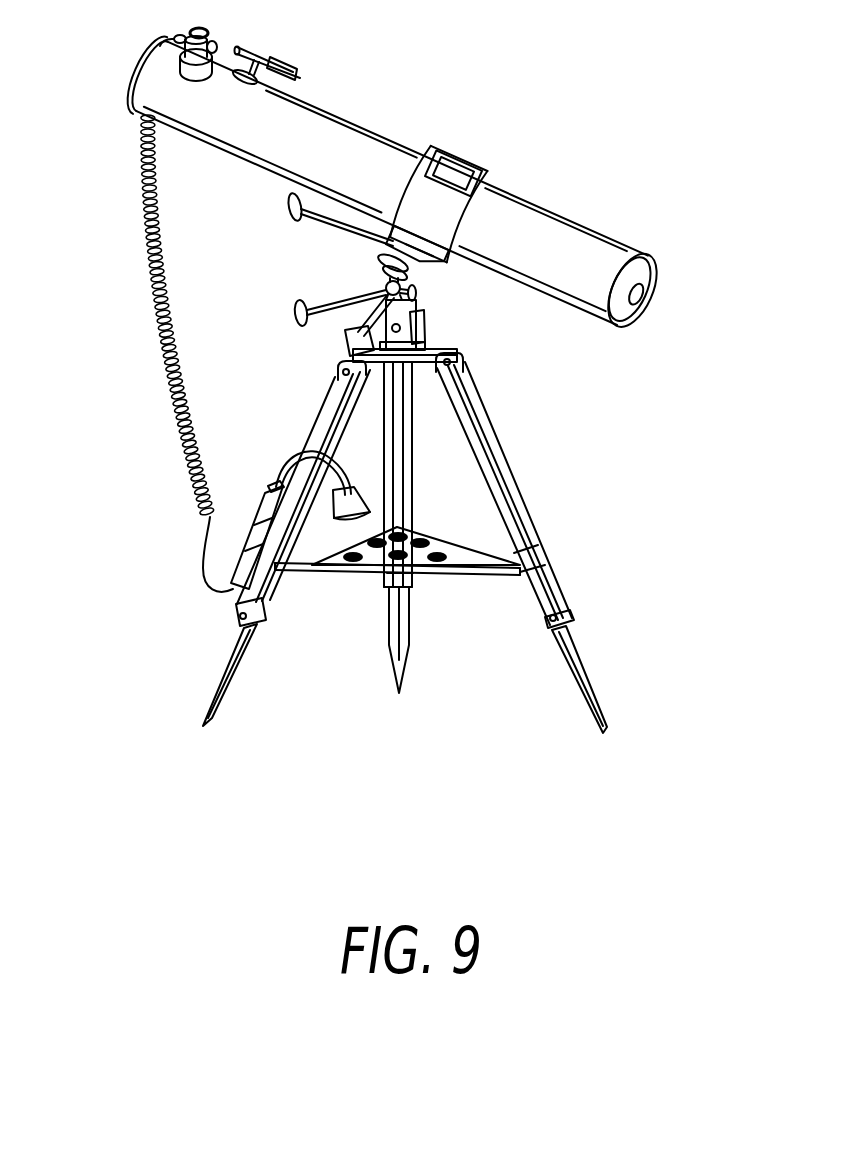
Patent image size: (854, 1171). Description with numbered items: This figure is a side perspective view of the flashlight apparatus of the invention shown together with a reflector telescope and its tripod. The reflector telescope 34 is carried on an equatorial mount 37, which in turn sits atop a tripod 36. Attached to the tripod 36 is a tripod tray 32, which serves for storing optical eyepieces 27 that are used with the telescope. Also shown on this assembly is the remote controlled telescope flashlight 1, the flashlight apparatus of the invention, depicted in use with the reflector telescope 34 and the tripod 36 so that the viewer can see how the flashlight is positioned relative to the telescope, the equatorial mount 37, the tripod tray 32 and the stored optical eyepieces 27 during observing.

The remote controlled telescope flashlight 1 is at (148, 400).
The reflector telescope 34 is at (547, 147).
The equatorial mount 37 is at (462, 334).
The tripod 36 is at (562, 504).
The tripod tray 32 is at (460, 553).
The optical eyepieces 27 is at (352, 571).